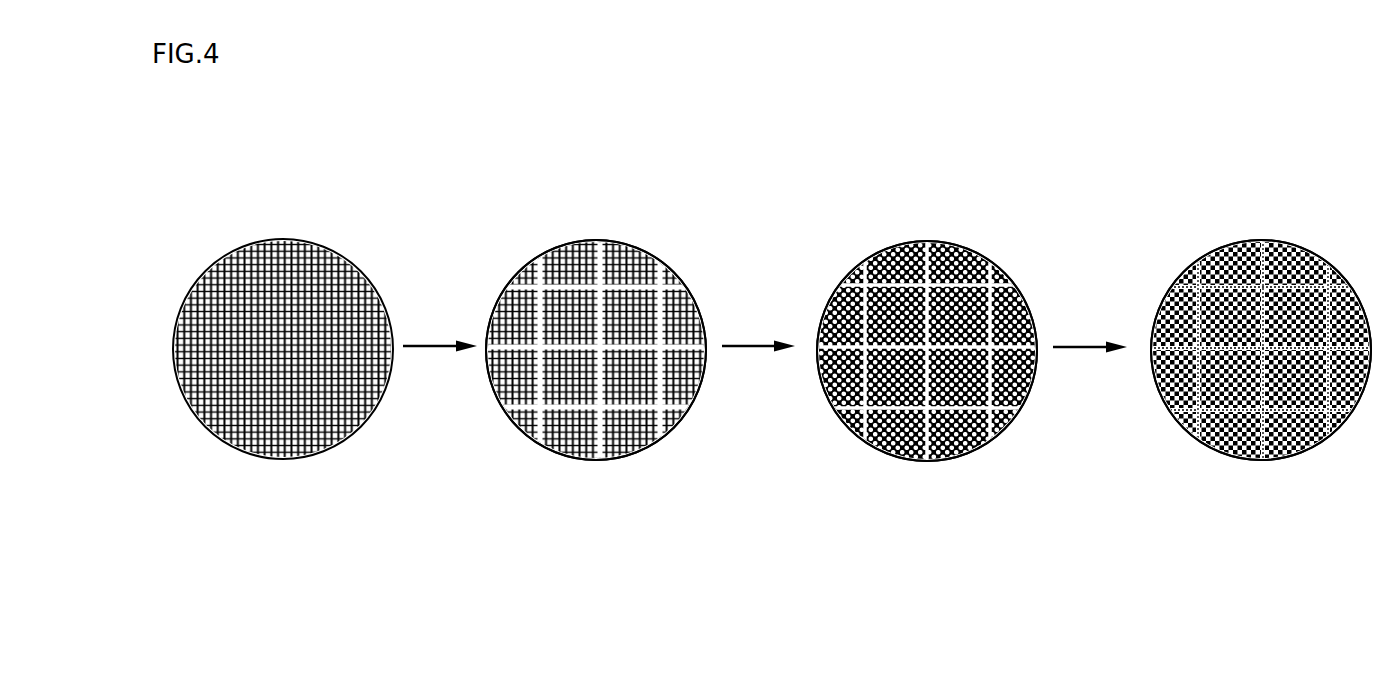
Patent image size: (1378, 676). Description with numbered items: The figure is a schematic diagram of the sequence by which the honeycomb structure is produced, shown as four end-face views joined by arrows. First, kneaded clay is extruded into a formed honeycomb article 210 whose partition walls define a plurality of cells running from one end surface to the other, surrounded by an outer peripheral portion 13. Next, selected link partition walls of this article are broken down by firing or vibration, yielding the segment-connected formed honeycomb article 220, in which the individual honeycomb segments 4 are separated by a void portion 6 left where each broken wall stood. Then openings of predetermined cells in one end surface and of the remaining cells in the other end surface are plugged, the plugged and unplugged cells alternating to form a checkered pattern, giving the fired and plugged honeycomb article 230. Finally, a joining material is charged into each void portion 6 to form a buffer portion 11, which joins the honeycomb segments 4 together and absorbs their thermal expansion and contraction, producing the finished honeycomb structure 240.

The formed honeycomb article 210 is at (283, 318).
The segment-connected formed honeycomb article 220 is at (596, 318).
The fired and plugged honeycomb article 230 is at (927, 319).
The honeycomb structure 240 is at (1261, 318).
The honeycomb segment 4 is at (645, 447).
The void portion 6 is at (658, 262).
The buffer portion 11 is at (1200, 262).
The outer peripheral portion 13 is at (1338, 437).